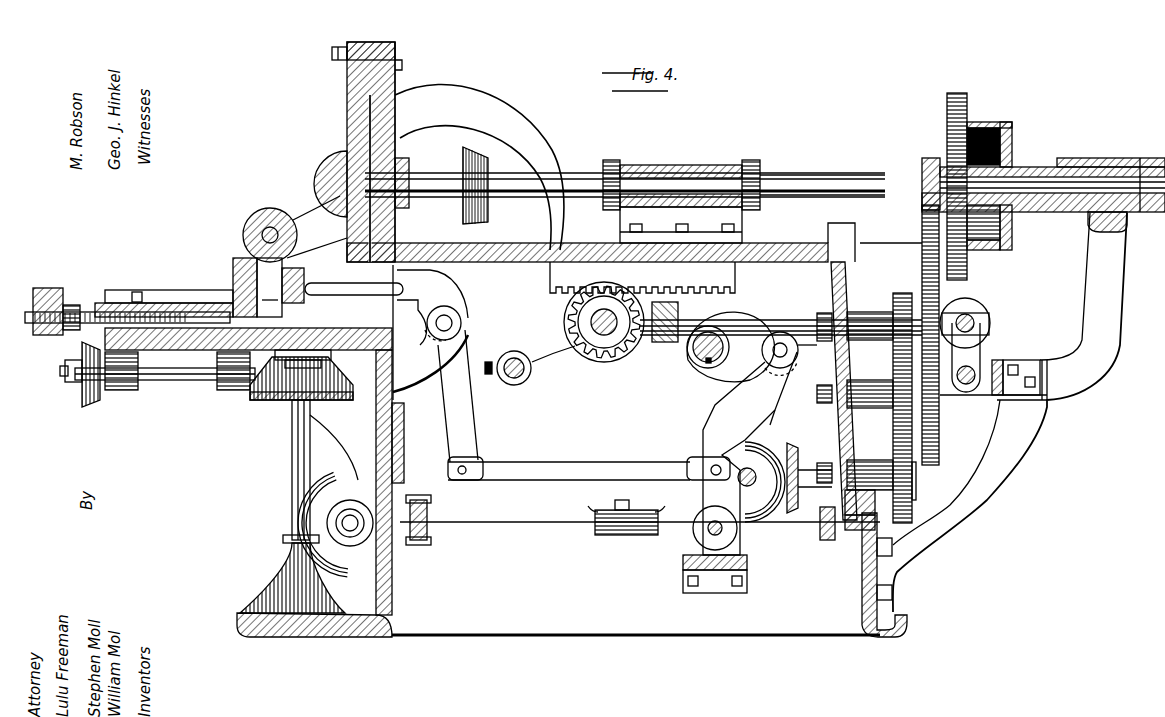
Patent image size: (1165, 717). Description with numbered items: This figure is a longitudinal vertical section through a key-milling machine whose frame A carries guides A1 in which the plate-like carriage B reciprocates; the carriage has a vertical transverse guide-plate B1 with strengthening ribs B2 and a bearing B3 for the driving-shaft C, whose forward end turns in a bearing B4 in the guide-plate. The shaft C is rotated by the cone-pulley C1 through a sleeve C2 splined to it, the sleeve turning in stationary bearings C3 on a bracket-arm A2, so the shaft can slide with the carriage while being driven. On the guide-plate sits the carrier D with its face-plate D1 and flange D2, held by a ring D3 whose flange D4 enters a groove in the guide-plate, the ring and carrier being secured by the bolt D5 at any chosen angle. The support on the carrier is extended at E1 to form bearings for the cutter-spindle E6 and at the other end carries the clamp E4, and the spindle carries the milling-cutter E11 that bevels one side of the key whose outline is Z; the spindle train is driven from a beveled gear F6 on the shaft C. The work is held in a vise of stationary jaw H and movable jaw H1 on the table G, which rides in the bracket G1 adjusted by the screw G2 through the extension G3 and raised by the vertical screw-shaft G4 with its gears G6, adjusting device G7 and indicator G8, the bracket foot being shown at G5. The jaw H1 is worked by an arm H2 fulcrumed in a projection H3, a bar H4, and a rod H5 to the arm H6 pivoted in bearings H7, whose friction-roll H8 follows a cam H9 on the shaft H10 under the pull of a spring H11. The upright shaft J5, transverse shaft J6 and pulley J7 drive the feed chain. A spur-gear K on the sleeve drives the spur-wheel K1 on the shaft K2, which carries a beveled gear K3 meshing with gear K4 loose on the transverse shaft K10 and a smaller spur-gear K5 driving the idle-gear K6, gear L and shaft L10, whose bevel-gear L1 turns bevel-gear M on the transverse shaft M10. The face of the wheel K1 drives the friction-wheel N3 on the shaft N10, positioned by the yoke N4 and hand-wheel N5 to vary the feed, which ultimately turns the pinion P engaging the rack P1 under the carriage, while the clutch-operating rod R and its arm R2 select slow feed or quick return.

The frame A is at (572, 449).
The guides A1 is at (857, 233).
The bracket-arm A2 is at (1010, 412).
The carriage B is at (580, 243).
The guide-plate B1 is at (398, 110).
The strengthening ribs B2 is at (495, 150).
The bearing B3 is at (686, 158).
The bearing B4 is at (406, 162).
The driving-shaft C is at (826, 175).
The cone-pulley C1 is at (1005, 122).
The sleeve C2 is at (1056, 160).
The stationary bearings C3 is at (1146, 158).
The carrier D is at (353, 152).
The face-plate D1 is at (352, 125).
The flange D2 is at (370, 42).
The ring D3 is at (397, 42).
The internally-projecting flange D4 is at (398, 66).
The screw or bolt D5 is at (332, 54).
The extended end of support E1 is at (320, 172).
The clamp E4 is at (300, 200).
The cutter-spindle E6 is at (243, 236).
The milling-cutter E11 is at (255, 222).
The beveled gear F6 is at (465, 216).
The table G is at (195, 303).
The bracket G1 is at (320, 364).
The screw G2 is at (74, 305).
The extension G3 is at (48, 288).
The vertical screw-shaft G4 is at (292, 478).
The foot G5 is at (282, 580).
The gears G6 is at (268, 402).
The adjusting device G7 is at (200, 382).
The indicator G8 is at (84, 398).
The stationary jaw H is at (233, 268).
The movable jaw H1 is at (296, 266).
The arm H2 is at (468, 408).
The projection H3 is at (430, 331).
The bar H4 is at (338, 283).
The rod H5 is at (589, 454).
The arm H6 is at (750, 443).
The bearings H7 is at (738, 532).
The friction-roll H8 is at (800, 348).
The cam H9 is at (742, 330).
The shaft H10 is at (700, 362).
The spring H11 is at (780, 418).
The upright shaft J5 is at (345, 470).
The transverse shaft J6 is at (392, 540).
The belt wheel or pulley J7 is at (330, 478).
The spur-gear K is at (918, 160).
The spur-wheel K1 is at (922, 258).
The shaft K2 is at (804, 318).
The beveled gear K3 is at (665, 345).
The beveled gear K4 is at (553, 348).
The smaller spur-gear K5 is at (905, 286).
The idle-gear K6 is at (885, 382).
The transverse shaft K10 is at (604, 336).
The gear L is at (912, 510).
The bevel-gear L1 is at (792, 443).
The shaft L10 is at (812, 470).
The bevel-gear M is at (765, 482).
The transverse shaft M10 is at (750, 486).
The friction-wheel N3 is at (990, 316).
The yoke N4 is at (966, 357).
The hand-wheel N5 is at (972, 386).
The shaft N10 is at (972, 315).
The pinion P is at (566, 322).
The rack P1 is at (642, 276).
The rod R is at (506, 355).
The arm R2 is at (526, 372).
The key outlines Z is at (270, 290).